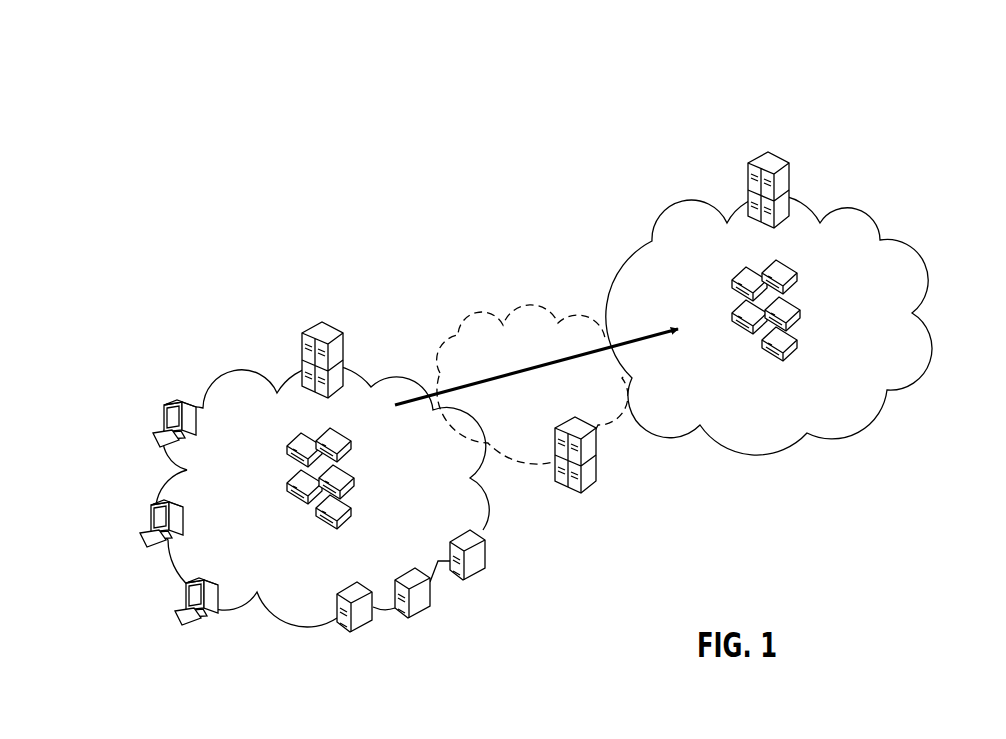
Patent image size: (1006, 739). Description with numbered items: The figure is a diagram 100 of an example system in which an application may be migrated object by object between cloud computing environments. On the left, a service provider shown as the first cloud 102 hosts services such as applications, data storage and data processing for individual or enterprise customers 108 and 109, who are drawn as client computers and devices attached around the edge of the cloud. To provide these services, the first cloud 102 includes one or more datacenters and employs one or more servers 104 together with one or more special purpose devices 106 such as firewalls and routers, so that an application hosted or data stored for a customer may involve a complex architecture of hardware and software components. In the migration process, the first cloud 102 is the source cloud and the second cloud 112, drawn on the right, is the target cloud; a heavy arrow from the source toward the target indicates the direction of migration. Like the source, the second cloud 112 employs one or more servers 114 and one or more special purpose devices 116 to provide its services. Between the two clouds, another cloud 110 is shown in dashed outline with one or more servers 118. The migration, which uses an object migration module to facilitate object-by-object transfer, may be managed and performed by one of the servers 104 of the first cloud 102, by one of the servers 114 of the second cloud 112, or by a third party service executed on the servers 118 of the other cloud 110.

The diagram 100 is at (884, 101).
The cloud 1 102 is at (275, 546).
The servers 104 is at (329, 316).
The special purpose devices 106 is at (358, 444).
The customers 108 is at (182, 606).
The customers 109 is at (375, 622).
The another cloud 110 is at (523, 297).
The cloud 2 112 is at (722, 378).
The servers 114 is at (776, 146).
The special purpose devices 116 is at (804, 274).
The servers 118 is at (589, 499).